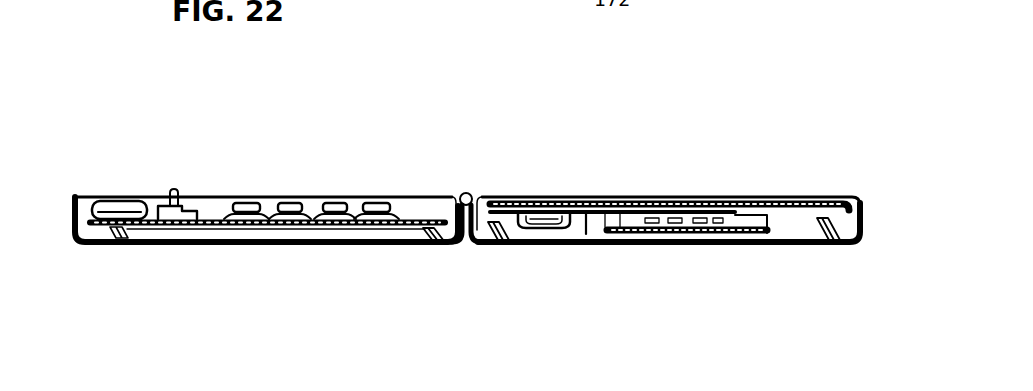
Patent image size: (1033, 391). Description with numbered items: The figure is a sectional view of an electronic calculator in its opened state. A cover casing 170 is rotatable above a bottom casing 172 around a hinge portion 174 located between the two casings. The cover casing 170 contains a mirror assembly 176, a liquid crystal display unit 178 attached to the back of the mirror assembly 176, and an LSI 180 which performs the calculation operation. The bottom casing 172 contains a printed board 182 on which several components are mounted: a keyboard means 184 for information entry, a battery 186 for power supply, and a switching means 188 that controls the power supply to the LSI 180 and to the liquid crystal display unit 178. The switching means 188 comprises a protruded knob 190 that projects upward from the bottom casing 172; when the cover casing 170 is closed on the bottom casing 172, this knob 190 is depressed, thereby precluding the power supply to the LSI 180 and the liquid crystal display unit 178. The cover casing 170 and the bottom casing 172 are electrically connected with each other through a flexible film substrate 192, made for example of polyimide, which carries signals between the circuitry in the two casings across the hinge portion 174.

The cover casing 170 is at (833, 243).
The bottom casing 172 is at (425, 240).
The hinge portion 174 is at (465, 193).
The mirror assembly 176 is at (727, 205).
The liquid crystal display unit 178 is at (732, 226).
The LSI 180 is at (543, 240).
The printed board 182 is at (235, 226).
The keyboard means 184 is at (338, 197).
The battery 186 is at (122, 197).
The switching means 188 is at (178, 226).
The protruded knob 190 is at (175, 193).
The flexible film substrate 192 is at (586, 236).